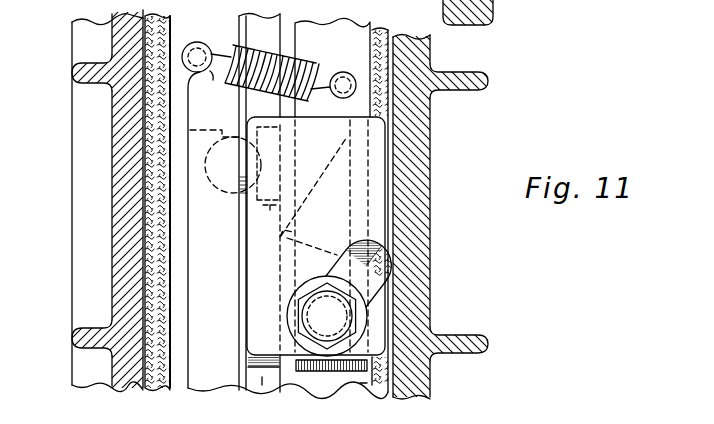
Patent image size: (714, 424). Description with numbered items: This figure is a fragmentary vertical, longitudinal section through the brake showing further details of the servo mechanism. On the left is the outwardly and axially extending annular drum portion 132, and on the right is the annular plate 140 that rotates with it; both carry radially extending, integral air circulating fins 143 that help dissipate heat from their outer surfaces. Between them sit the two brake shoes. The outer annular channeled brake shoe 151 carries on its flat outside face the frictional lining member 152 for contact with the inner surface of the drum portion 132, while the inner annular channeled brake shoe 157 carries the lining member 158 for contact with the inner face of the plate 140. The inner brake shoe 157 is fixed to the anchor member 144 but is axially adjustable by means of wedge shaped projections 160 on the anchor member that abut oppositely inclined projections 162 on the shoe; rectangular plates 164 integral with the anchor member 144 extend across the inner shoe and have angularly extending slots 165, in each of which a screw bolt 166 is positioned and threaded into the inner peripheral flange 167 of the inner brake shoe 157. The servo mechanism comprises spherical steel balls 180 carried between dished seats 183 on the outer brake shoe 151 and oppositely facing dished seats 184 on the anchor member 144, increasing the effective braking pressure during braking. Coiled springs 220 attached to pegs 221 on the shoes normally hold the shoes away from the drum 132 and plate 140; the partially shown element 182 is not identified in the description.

The drum portion 132 is at (118, 115).
The air circulating fins 143 is at (87, 70).
The lining member 152 is at (153, 263).
The outer brake shoe 151 is at (173, 237).
The spherical steel balls 180 is at (211, 229).
The dished seats 183 is at (212, 193).
The pegs 221 is at (197, 50).
The coiled springs 220 is at (288, 60).
The rectangular plates 164 is at (378, 193).
The annular plate 140 is at (417, 258).
The lining member 158 is at (377, 62).
The projections 162 is at (340, 166).
The wedge shaped projections 160 is at (327, 137).
The dished seats 184 is at (267, 210).
The slot 165 is at (368, 242).
The screw bolt 166 is at (343, 315).
The anchor member 144 is at (262, 392).
The inner peripheral flange 167 is at (325, 370).
The inner brake shoe 157 is at (367, 383).
The lower member 182 is at (288, 403).